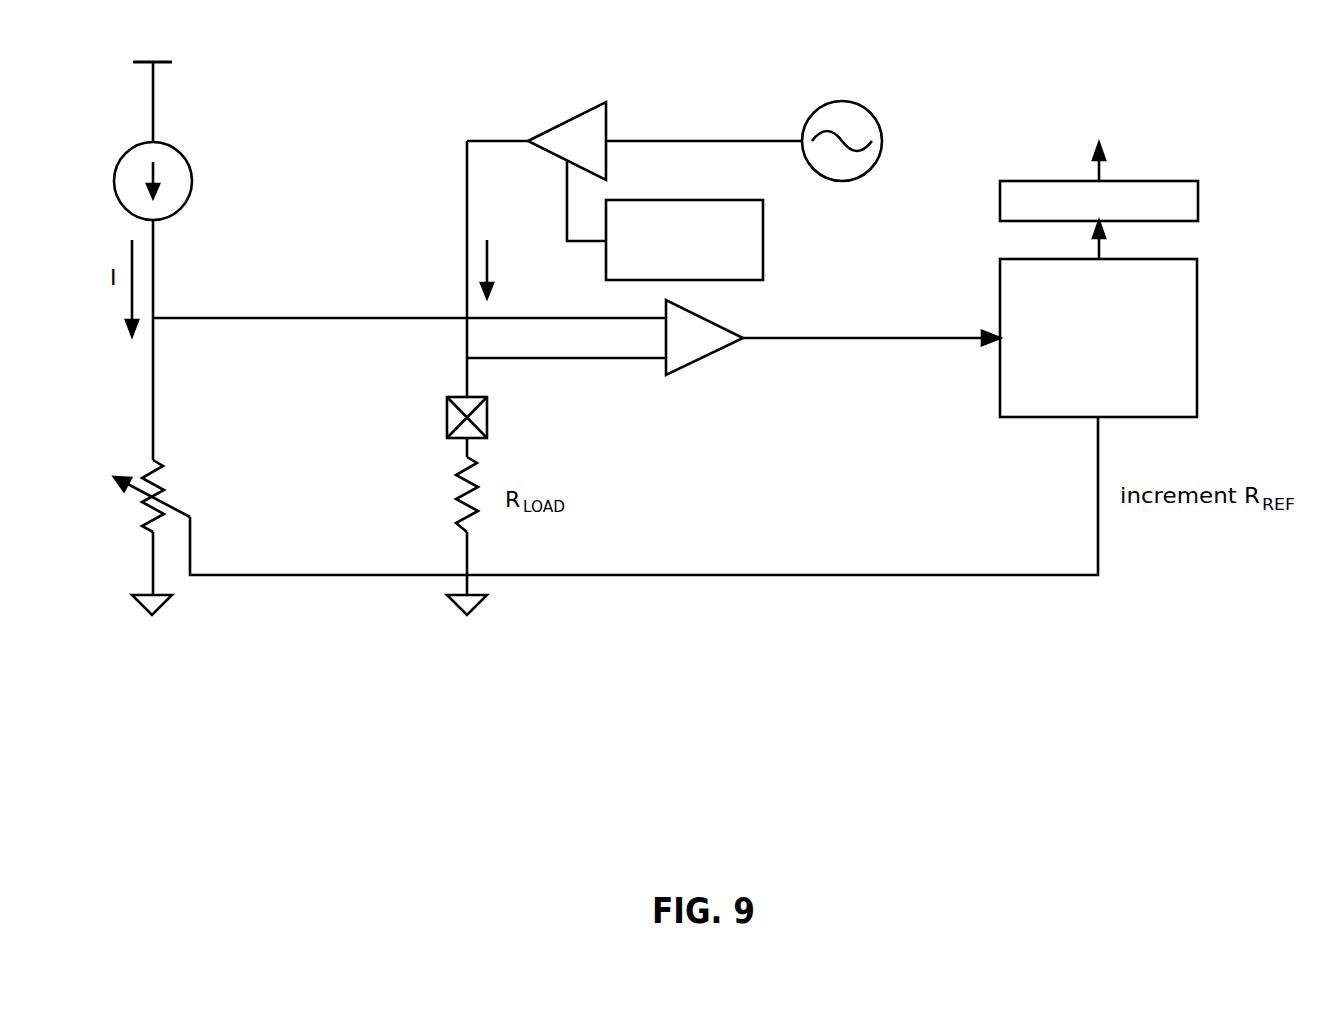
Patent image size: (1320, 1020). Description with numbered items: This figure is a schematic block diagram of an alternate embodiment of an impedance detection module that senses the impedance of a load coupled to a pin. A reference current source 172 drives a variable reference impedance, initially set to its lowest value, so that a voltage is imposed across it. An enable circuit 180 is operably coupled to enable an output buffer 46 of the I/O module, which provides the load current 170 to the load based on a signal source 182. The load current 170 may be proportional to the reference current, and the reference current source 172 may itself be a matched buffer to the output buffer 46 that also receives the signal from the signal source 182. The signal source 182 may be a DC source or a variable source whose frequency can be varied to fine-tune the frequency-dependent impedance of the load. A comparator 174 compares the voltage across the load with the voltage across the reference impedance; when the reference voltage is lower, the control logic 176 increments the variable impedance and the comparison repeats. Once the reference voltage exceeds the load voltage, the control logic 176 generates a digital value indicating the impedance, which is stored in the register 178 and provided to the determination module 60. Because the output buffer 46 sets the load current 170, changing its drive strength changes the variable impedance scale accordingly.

The reference current source 172 is at (257, 181).
The load current 170 is at (419, 265).
The output buffer 46 is at (633, 155).
The signal source 182 is at (843, 126).
The enable circuit 180 is at (684, 240).
The comparator 174 is at (819, 362).
The control logic 176 is at (1098, 338).
The register 178 is at (1099, 220).
The determination module 60 is at (1099, 127).